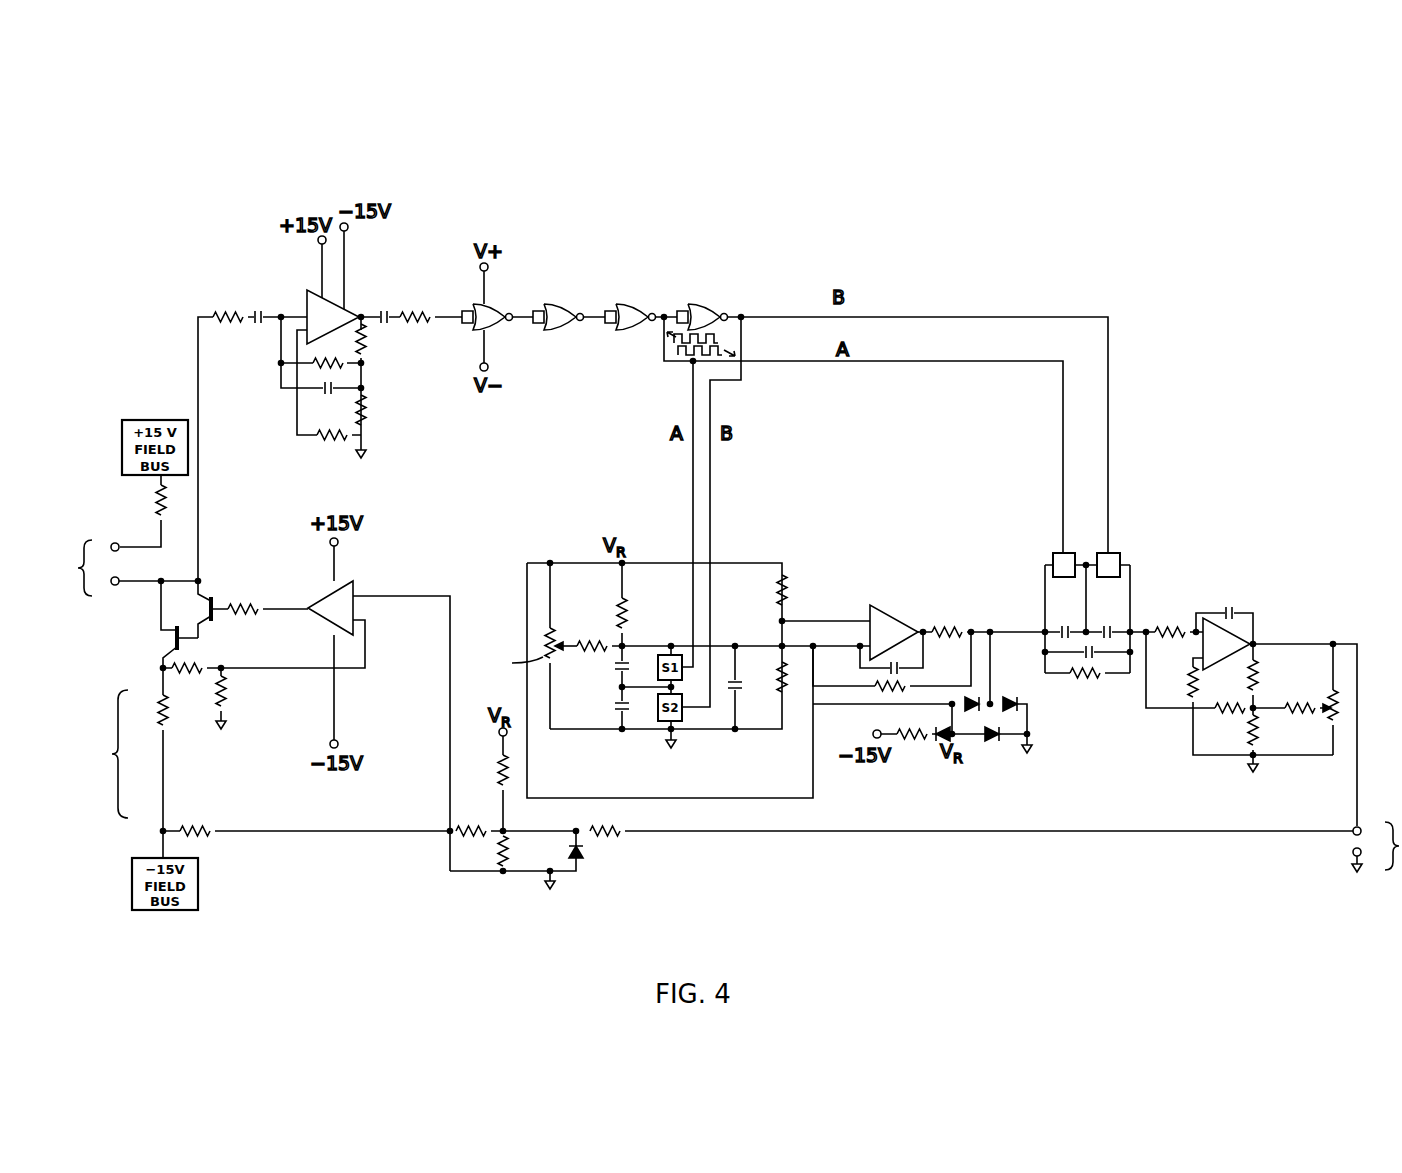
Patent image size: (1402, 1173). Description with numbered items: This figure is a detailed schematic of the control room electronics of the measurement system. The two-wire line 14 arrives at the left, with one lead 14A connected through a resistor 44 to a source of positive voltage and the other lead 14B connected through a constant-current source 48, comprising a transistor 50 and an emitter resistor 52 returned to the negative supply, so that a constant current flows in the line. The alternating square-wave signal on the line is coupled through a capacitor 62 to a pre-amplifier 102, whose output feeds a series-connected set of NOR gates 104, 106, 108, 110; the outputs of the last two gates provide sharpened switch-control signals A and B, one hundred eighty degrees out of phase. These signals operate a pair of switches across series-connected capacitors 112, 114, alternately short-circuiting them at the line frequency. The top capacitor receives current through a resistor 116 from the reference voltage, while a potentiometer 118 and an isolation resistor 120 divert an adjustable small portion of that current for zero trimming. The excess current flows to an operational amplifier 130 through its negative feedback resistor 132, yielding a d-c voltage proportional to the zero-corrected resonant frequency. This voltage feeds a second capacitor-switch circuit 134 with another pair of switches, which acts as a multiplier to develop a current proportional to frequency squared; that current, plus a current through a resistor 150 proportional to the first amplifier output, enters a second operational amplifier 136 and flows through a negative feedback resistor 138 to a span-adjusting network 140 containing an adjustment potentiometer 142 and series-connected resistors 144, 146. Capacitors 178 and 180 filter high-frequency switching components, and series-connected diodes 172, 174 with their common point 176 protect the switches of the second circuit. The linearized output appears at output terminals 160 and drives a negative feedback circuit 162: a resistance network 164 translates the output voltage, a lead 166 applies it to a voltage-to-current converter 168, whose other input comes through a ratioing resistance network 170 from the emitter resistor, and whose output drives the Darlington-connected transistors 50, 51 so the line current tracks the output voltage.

The two-wire line 14 is at (120, 565).
The lead 14A is at (135, 542).
The lead 14B is at (148, 586).
The resistor 44 is at (152, 501).
The constant-current source 48 is at (104, 744).
The transistor 50 is at (180, 650).
The transistor 51 is at (212, 602).
The emitter resistor 52 is at (162, 716).
The capacitor 62 is at (246, 299).
The pre-amplifier 102 is at (300, 289).
The NOR gate 104 is at (488, 302).
The NOR gate 106 is at (541, 304).
The NOR gate 108 is at (646, 300).
The NOR gate 110 is at (722, 300).
The capacitor 112 is at (610, 676).
The capacitor 114 is at (612, 710).
The resistor 116 is at (632, 616).
The potentiometer 118 is at (540, 647).
The isolation resistor 120 is at (600, 644).
The operational amplifier 130 is at (905, 642).
The negative feedback resistor 132 is at (906, 684).
The capacitor-switch circuit 134 is at (1124, 563).
The operational amplifier 136 is at (1237, 653).
The negative feedback resistor 138 is at (1236, 716).
The span-adjusting network 140 is at (1309, 696).
The adjustment potentiometer 142 is at (1340, 708).
The resistor 144 is at (1251, 688).
The resistor 146 is at (1248, 754).
The resistor 150 is at (1095, 666).
The output terminals 160 is at (1356, 822).
The negative feedback circuit 162 is at (1017, 831).
The resistance network 164 is at (495, 875).
The lead 166 is at (450, 774).
The voltage-to-current converter 168 is at (347, 617).
The ratioing resistance network 170 is at (982, 754).
The diode 172 is at (953, 748).
The diode 174 is at (1010, 710).
The common point 176 is at (1030, 664).
The capacitor 178 is at (716, 712).
The capacitor 180 is at (1116, 666).